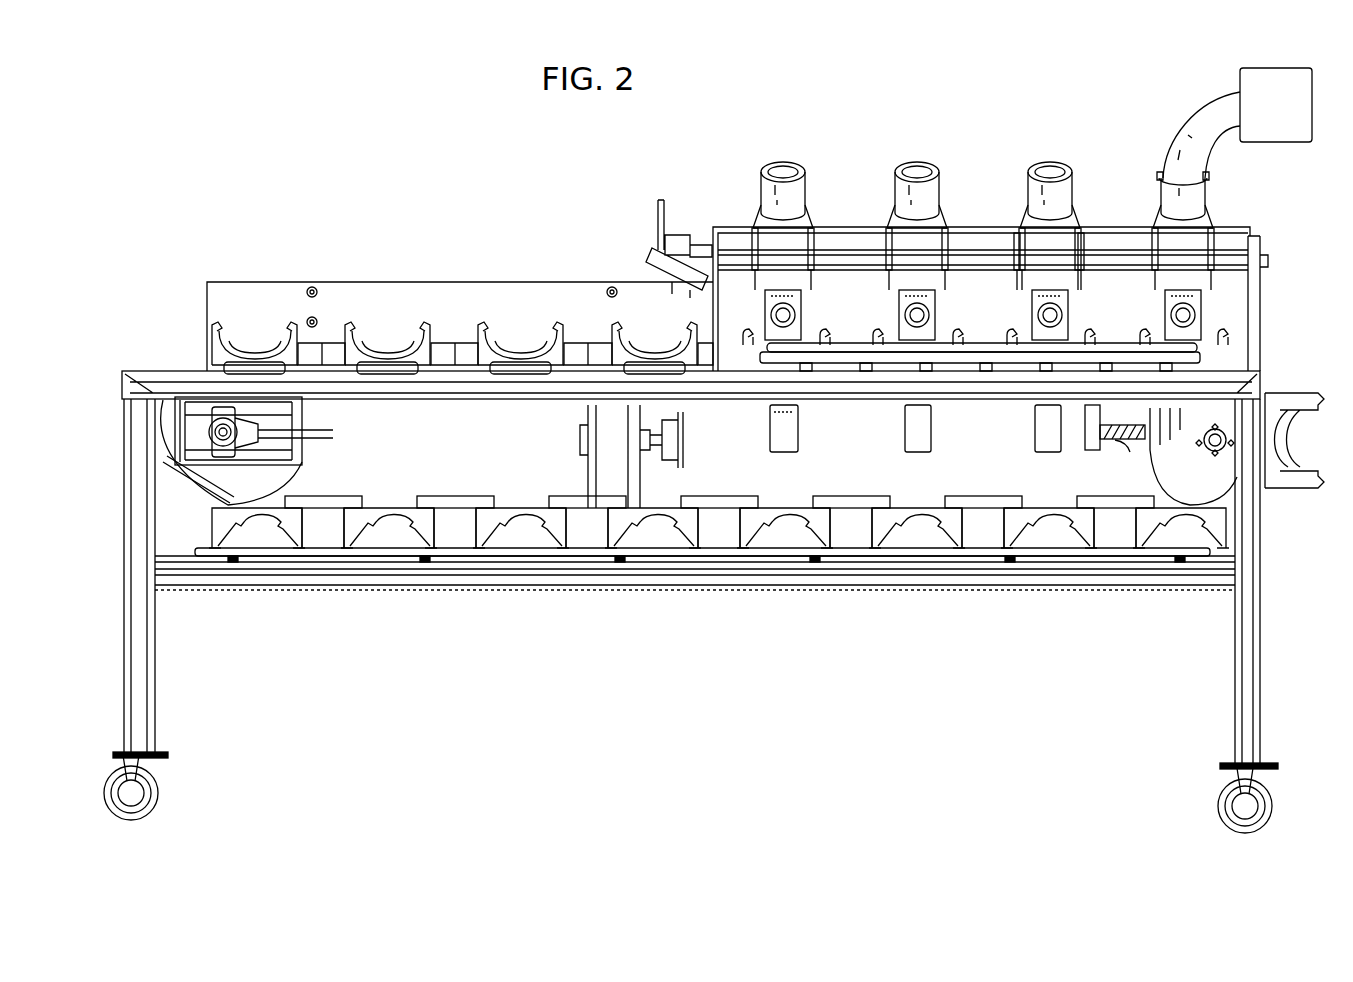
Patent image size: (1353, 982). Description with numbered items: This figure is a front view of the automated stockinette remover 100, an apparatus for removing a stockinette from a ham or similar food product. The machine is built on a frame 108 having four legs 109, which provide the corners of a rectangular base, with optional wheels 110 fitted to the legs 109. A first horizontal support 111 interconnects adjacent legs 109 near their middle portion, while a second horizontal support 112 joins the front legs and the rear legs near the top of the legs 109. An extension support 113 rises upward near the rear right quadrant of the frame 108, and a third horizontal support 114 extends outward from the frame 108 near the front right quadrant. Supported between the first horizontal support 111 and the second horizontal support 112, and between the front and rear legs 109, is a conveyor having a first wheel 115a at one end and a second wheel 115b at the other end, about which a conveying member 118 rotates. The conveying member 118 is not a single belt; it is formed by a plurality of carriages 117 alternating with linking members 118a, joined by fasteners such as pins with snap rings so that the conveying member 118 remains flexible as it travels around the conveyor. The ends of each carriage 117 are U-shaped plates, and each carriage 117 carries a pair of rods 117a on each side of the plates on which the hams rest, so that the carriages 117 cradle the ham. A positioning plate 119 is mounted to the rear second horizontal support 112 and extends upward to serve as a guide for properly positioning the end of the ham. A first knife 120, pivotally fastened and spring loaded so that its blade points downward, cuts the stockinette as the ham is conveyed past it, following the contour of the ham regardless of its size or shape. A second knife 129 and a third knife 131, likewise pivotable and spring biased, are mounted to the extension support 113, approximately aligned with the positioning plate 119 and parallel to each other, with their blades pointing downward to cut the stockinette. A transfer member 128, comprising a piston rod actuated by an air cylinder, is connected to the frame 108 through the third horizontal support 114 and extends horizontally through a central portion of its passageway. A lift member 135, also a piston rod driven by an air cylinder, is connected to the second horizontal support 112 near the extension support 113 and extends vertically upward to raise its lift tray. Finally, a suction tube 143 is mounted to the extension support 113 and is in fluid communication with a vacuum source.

The stockinette remover 100 is at (350, 200).
The frame 108 is at (118, 545).
The legs 109 is at (141, 665).
The wheels 110 is at (158, 797).
The first horizontal support 111 is at (326, 576).
The second horizontal support 112 is at (177, 388).
The extension support 113 is at (1256, 323).
The third horizontal support 114 is at (990, 352).
The first wheel 115a is at (243, 487).
The second wheel 115b is at (1168, 456).
The carriages 117 is at (432, 330).
The rods 117a is at (942, 527).
The conveying member 118 is at (818, 497).
The linking members 118a is at (455, 498).
The positioning plate 119 is at (538, 302).
The first knife 120 is at (650, 233).
The transfer member 128 is at (800, 313).
The second knife 129 is at (1013, 285).
The third knife 131 is at (1072, 286).
The lift member 135 is at (768, 431).
The suction tube 143 is at (805, 190).